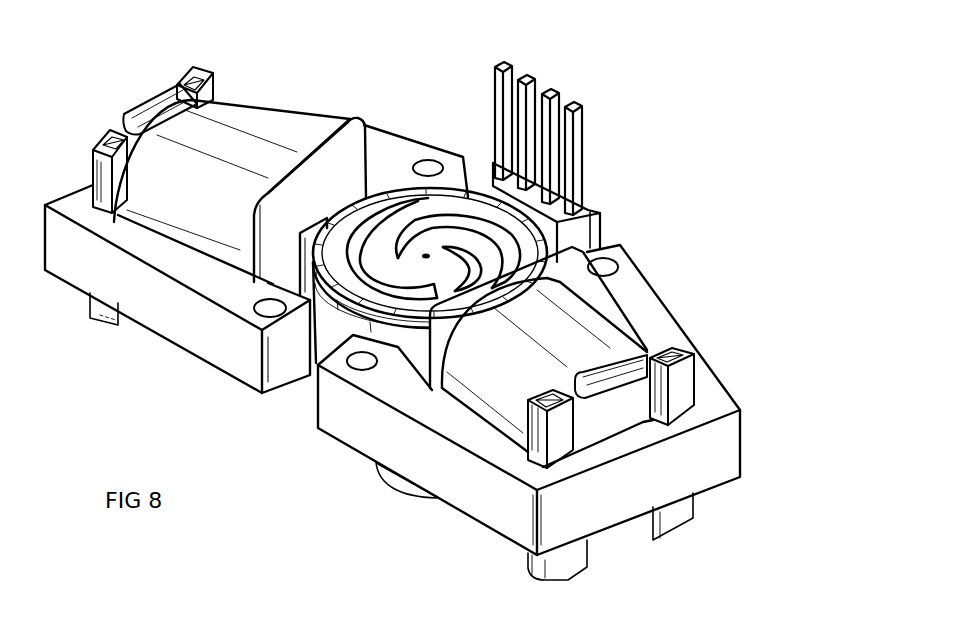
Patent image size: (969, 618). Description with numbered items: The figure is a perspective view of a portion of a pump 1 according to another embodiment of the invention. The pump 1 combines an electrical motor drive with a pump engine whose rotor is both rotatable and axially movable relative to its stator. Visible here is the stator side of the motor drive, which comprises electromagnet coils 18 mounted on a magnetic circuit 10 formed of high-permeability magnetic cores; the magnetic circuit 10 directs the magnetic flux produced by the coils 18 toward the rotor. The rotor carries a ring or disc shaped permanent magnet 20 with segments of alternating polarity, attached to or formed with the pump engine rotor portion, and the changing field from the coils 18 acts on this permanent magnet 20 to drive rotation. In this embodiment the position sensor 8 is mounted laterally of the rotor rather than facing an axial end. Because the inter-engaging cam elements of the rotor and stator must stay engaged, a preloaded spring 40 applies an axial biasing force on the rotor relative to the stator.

The pump 1 is at (337, 494).
The position sensor 8 is at (611, 209).
The magnetic circuit 10 is at (743, 442).
The coil 18 is at (592, 327).
The permanent magnet 20 is at (328, 322).
The preloaded spring 40 is at (452, 208).